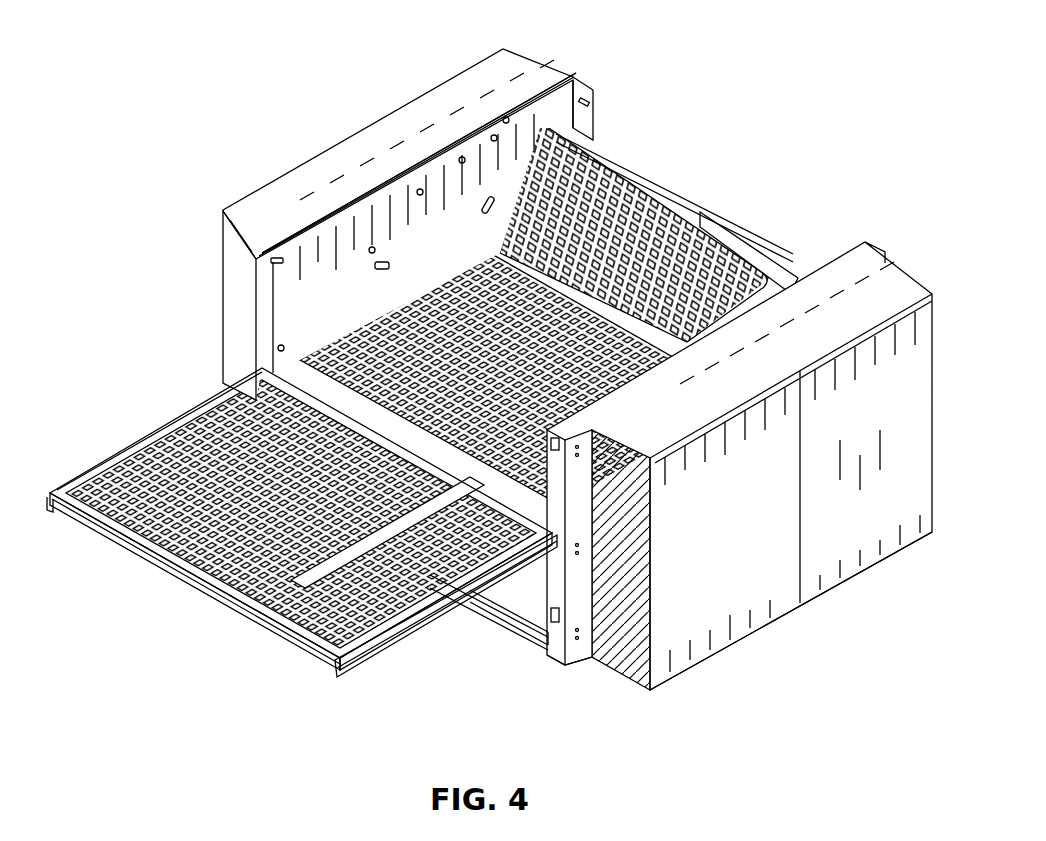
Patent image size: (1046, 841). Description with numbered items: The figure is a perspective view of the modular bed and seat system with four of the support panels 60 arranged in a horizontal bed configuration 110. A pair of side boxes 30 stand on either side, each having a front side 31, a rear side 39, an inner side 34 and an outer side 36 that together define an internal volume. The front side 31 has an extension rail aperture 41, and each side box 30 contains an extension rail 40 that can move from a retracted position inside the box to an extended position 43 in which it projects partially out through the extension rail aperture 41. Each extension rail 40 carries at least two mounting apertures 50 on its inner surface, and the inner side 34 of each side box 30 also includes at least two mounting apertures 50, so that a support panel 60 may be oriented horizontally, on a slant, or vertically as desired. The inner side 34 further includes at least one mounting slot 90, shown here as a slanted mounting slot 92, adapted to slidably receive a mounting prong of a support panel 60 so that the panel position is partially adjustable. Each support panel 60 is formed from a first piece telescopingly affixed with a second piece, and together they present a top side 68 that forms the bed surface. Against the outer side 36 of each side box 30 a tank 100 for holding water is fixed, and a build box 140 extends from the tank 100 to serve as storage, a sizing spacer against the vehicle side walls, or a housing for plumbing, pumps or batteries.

The side box 30 is at (592, 345).
The front side 31 is at (557, 513).
The inner side 34 is at (247, 212).
The outer side 36 is at (580, 463).
The rear side 39 is at (600, 103).
The extension rail 40 is at (446, 614).
The extension rail aperture 41 is at (545, 624).
The extended position 43 is at (366, 657).
The mounting aperture 50 is at (383, 262).
The support panel 60 is at (510, 265).
The top side 68 is at (757, 252).
The mounting slot 90 is at (415, 152).
The slanted mounting slot 92 is at (490, 196).
The tank 100 is at (497, 65).
The horizontal bed configuration 110 is at (150, 409).
The build box 140 is at (713, 608).